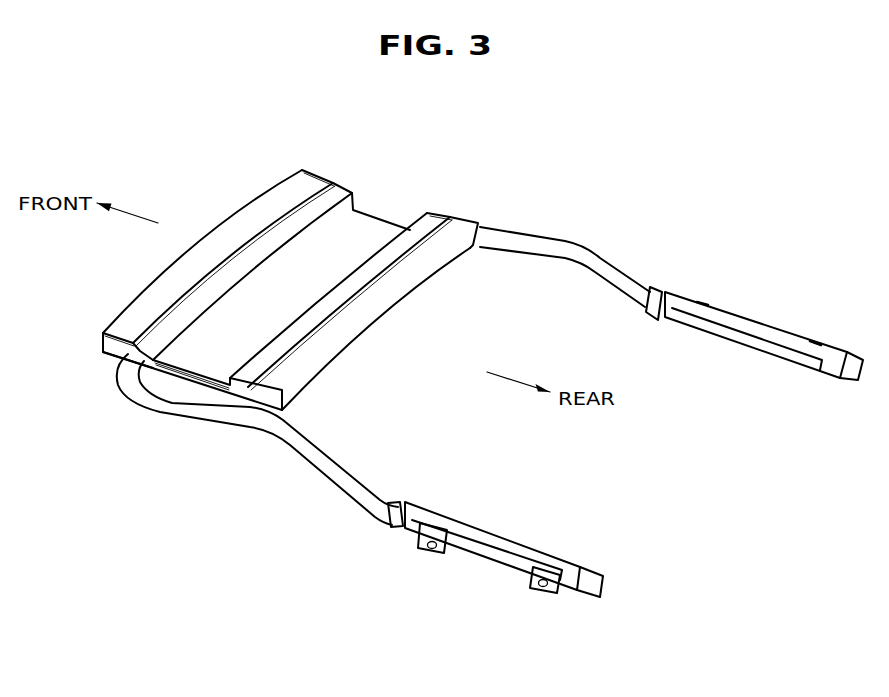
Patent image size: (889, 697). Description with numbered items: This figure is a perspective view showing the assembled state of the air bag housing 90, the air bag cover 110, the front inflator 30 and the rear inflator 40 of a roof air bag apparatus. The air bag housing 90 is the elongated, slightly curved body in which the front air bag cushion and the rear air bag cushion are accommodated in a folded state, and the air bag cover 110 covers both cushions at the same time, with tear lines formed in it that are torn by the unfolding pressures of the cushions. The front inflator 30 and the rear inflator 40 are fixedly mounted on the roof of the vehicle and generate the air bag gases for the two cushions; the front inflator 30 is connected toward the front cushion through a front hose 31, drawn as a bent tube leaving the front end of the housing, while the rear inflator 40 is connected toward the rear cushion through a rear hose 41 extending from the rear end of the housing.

The air bag housing 90 is at (283, 280).
The air bag cover 110 is at (110, 343).
The front hose 31 is at (162, 407).
The front inflator 30 is at (503, 540).
The rear hose 41 is at (560, 250).
The rear inflator 40 is at (792, 340).